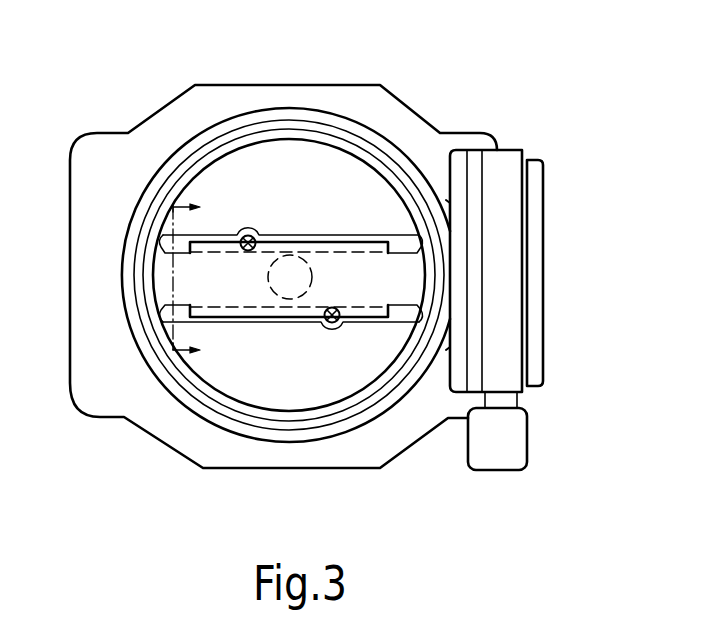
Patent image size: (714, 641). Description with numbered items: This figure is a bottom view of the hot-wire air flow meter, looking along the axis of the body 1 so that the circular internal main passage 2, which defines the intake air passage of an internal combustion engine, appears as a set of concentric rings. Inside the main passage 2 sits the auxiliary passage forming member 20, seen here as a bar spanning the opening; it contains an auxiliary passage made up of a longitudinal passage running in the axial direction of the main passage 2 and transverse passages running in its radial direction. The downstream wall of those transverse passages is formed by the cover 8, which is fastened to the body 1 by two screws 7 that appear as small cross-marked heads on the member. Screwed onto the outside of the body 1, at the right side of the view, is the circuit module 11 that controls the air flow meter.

The body 1 is at (150, 118).
The main passage 2 is at (283, 402).
The screws 7 is at (251, 231).
The cover 8 is at (238, 287).
The circuit module 11 is at (547, 240).
The auxiliary passage forming member 20 is at (358, 236).